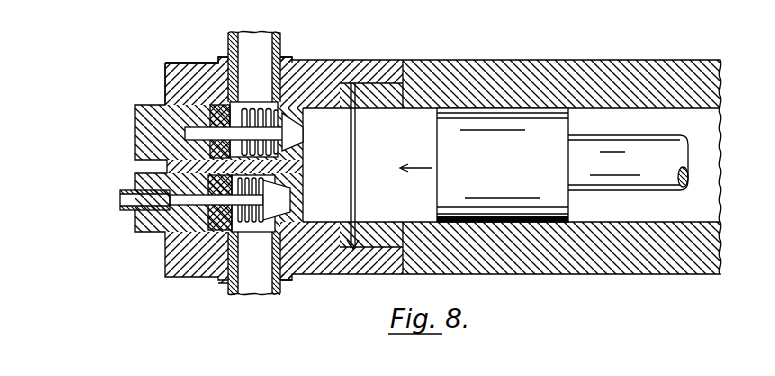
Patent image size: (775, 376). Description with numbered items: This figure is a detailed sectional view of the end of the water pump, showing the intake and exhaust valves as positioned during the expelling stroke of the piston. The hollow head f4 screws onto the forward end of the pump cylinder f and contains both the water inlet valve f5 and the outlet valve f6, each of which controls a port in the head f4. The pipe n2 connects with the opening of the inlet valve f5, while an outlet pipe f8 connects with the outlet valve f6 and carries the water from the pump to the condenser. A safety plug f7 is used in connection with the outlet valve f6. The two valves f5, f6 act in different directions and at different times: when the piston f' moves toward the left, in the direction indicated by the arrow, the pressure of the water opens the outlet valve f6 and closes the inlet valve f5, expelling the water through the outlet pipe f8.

The pump cylinder f is at (428, 151).
The piston f' is at (562, 165).
The hollow head f4 is at (165, 70).
The pipe n2 is at (283, 40).
The inlet valve f5 is at (298, 130).
The outlet valve f6 is at (293, 200).
The safety plug f7 is at (138, 215).
The outlet pipe f8 is at (253, 296).